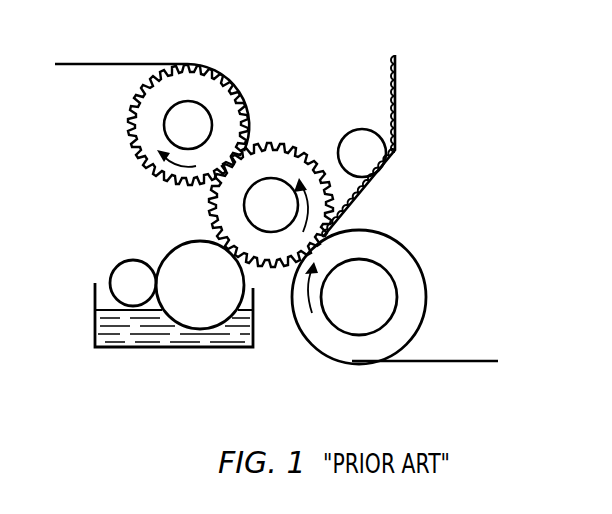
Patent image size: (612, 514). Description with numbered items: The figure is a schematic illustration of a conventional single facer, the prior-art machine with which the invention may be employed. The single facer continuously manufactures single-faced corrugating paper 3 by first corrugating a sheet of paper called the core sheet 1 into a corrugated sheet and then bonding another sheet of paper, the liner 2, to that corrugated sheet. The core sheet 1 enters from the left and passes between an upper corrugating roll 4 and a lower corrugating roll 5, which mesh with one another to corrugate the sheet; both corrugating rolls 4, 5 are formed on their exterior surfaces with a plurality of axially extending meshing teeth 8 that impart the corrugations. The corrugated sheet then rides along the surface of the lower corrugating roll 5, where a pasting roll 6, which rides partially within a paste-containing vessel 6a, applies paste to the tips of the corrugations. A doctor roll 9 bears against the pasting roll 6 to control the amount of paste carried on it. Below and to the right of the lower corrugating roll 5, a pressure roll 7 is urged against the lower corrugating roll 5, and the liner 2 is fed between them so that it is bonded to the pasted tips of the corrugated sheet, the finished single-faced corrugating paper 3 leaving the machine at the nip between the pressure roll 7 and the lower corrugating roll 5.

The core sheet 1 is at (115, 63).
The liner 2 is at (427, 362).
The single-faced corrugating paper 3 is at (396, 90).
The upper corrugating roll 4 is at (150, 120).
The lower corrugating roll 5 is at (265, 165).
The pasting roll 6 is at (190, 272).
The paste-containing vessel 6a is at (233, 340).
The pressure roll 7 is at (413, 297).
The meshing teeth 8 is at (298, 152).
The doctor roll 9 is at (132, 283).